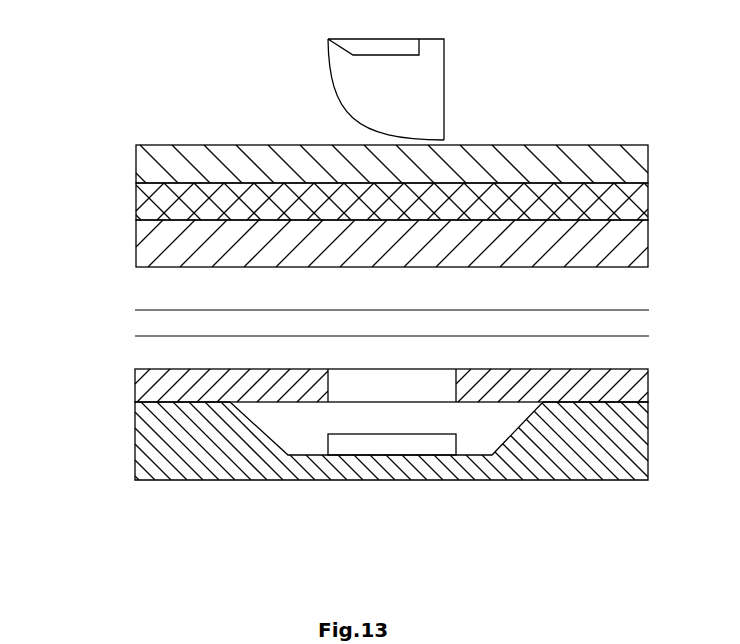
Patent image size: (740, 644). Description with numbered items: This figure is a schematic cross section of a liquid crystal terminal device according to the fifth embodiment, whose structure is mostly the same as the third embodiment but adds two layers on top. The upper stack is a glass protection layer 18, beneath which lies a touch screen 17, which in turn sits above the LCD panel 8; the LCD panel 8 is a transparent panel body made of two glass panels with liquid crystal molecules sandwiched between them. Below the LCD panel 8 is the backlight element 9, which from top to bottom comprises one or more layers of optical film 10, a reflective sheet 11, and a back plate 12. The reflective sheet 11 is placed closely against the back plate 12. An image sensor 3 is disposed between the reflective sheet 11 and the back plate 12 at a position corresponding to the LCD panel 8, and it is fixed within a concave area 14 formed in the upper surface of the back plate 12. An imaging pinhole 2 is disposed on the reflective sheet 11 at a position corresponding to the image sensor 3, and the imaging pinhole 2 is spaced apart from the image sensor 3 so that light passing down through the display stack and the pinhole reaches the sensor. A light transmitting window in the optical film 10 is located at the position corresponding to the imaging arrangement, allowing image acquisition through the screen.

The glass protection layer 18 is at (152, 165).
The touch screen 17 is at (150, 205).
The LCD panel 8 is at (150, 247).
The backlight element 9 is at (75, 309).
The optical film 10 is at (145, 336).
The reflective sheet 11 is at (155, 399).
The back plate 12 is at (165, 440).
The imaging pinhole 2 is at (413, 393).
The image sensor 3 is at (422, 446).
The concave area 14 is at (473, 438).